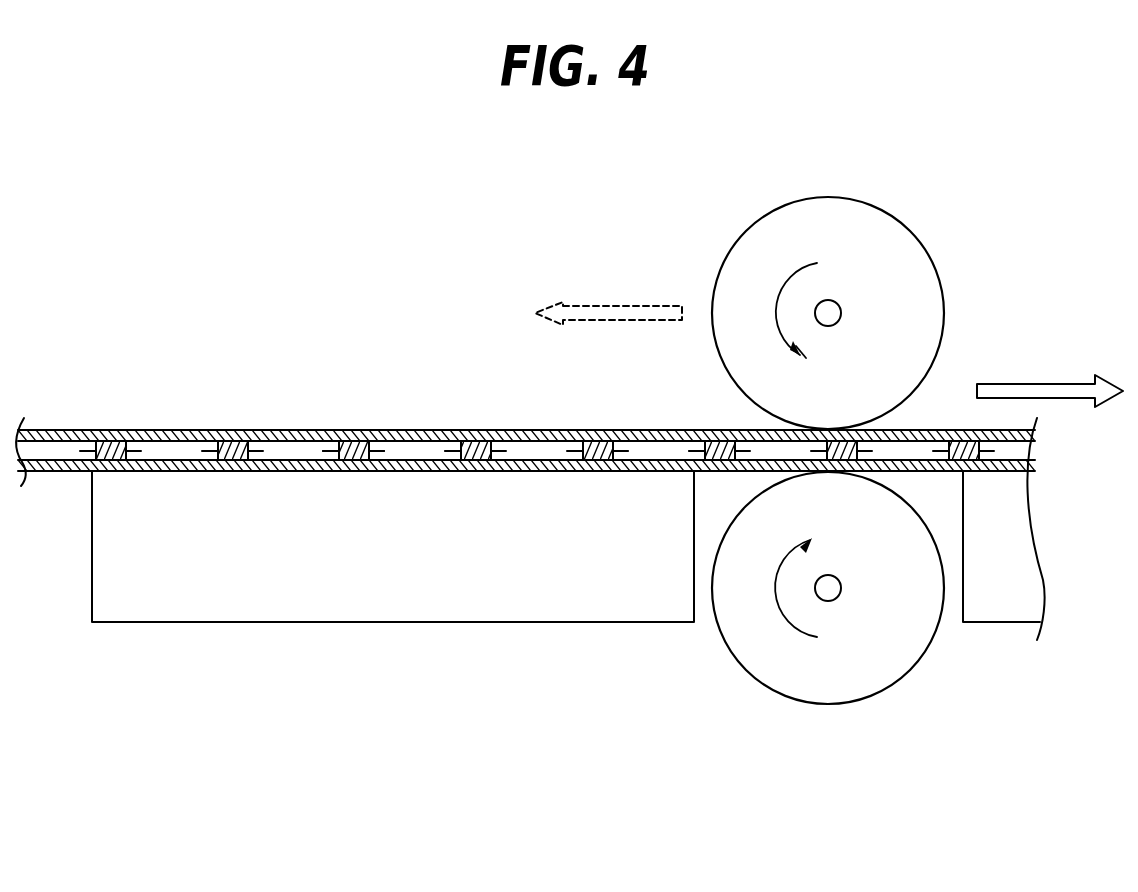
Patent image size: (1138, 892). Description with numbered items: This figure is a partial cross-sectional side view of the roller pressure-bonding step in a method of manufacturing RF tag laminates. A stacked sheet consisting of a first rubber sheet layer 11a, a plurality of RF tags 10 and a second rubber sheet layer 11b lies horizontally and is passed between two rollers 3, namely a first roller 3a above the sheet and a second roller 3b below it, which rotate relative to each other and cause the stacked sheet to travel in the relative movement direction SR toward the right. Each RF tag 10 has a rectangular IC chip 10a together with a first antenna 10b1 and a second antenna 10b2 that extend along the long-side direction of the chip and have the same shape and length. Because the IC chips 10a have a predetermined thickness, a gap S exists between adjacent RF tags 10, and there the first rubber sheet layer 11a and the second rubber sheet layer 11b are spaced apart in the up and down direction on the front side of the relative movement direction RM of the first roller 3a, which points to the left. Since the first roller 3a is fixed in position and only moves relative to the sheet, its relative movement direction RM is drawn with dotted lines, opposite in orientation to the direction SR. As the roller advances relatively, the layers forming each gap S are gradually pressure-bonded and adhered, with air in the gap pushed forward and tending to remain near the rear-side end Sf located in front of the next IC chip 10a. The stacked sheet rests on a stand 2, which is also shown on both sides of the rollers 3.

The stand 2 is at (390, 603).
The rollers 3 is at (863, 463).
The first roller 3a is at (910, 258).
The second roller 3b is at (887, 653).
The RF tag 10 is at (231, 452).
The IC chip 10a is at (233, 441).
The first antenna 10b1 is at (333, 450).
The second antenna 10b2 is at (380, 450).
The first rubber sheet layer 11a is at (162, 471).
The second rubber sheet layer 11b is at (157, 430).
The gap S is at (415, 452).
The rear-side end of gap Sf is at (455, 452).
The relative movement direction of first roller RM is at (608, 301).
The relative movement direction of stacked sheet SR is at (1050, 382).